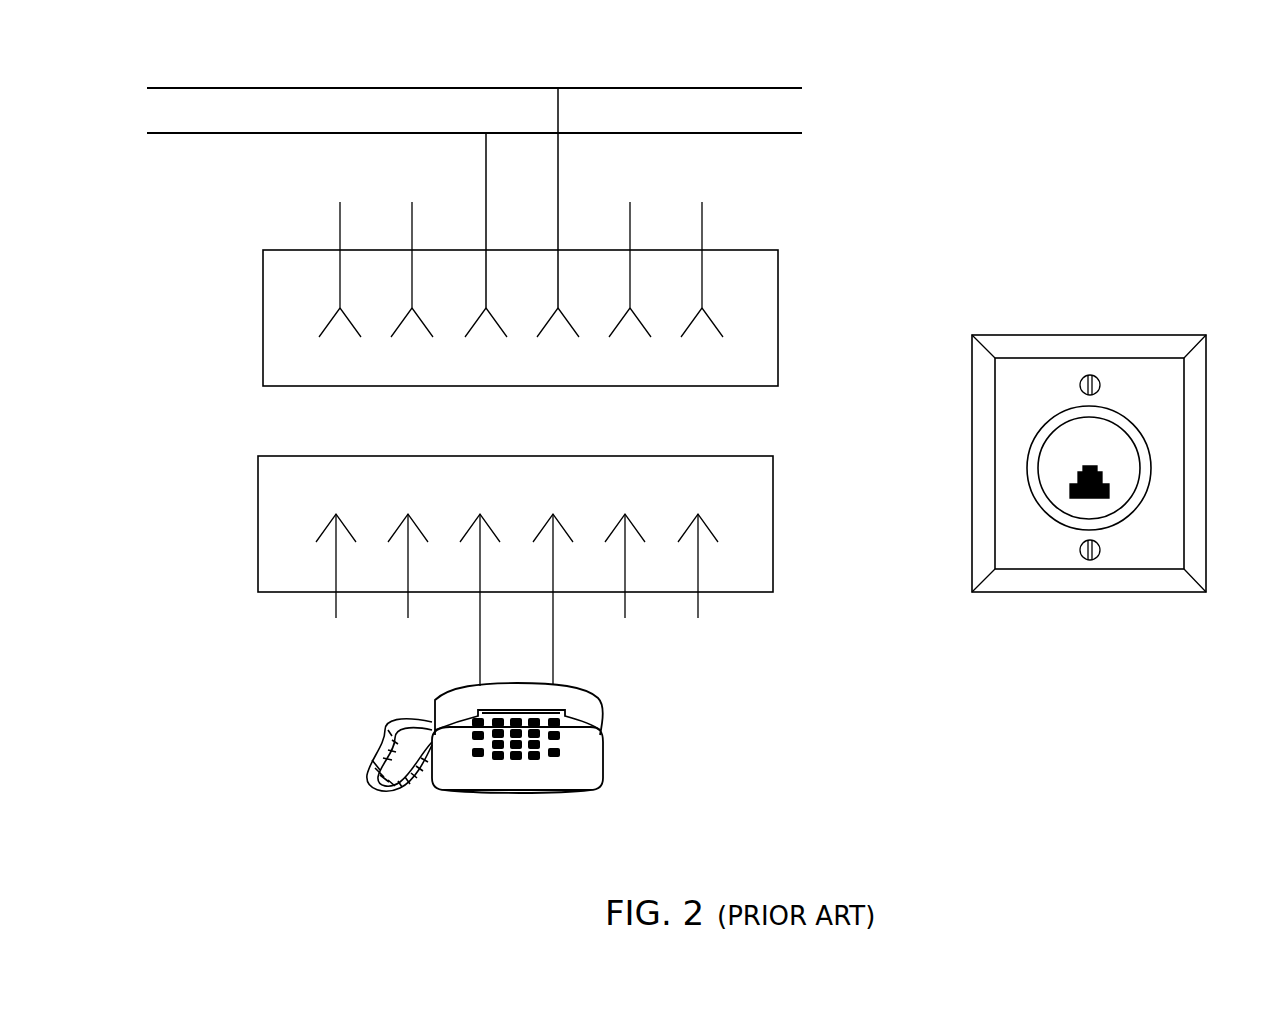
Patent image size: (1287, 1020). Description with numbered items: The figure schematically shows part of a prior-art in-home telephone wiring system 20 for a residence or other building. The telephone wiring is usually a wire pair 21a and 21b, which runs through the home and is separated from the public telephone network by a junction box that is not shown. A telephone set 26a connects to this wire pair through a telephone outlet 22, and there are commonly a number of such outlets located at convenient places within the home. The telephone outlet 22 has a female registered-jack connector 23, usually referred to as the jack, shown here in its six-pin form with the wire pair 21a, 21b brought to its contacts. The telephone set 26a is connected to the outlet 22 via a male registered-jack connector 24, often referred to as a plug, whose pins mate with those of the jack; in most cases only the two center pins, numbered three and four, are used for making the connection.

The in-home telephone wiring system 20 is at (985, 199).
The wire of the wire pair 21a is at (730, 87).
The wire of the wire pair 21b is at (730, 134).
The telephone outlet 22 is at (1206, 462).
The female RJ-11 connector 23 is at (262, 318).
The male RJ-11 connector 24 is at (258, 525).
The telephone set 26a is at (603, 757).